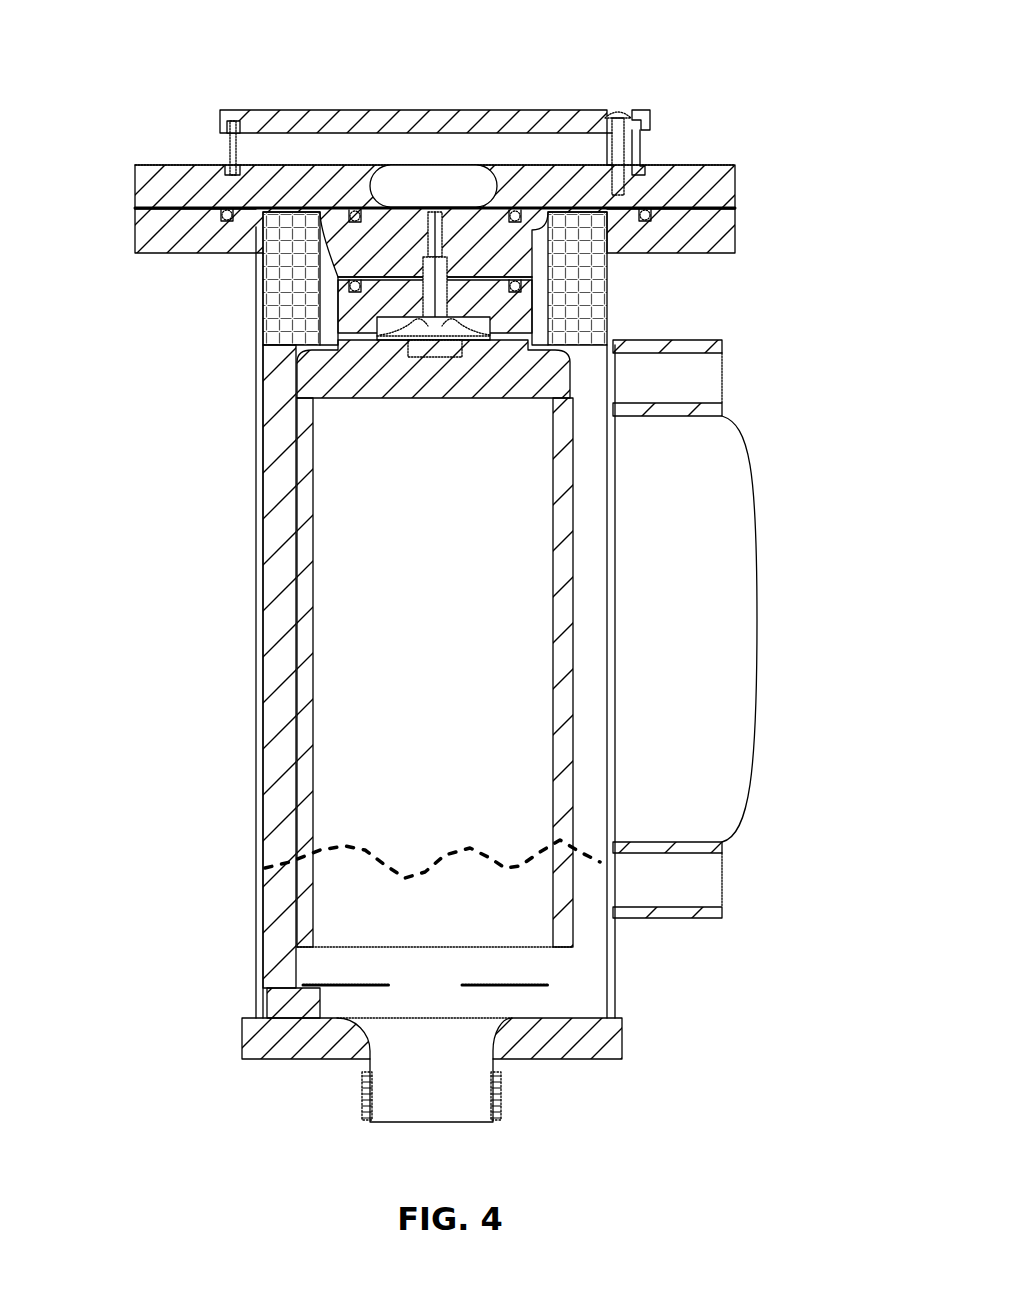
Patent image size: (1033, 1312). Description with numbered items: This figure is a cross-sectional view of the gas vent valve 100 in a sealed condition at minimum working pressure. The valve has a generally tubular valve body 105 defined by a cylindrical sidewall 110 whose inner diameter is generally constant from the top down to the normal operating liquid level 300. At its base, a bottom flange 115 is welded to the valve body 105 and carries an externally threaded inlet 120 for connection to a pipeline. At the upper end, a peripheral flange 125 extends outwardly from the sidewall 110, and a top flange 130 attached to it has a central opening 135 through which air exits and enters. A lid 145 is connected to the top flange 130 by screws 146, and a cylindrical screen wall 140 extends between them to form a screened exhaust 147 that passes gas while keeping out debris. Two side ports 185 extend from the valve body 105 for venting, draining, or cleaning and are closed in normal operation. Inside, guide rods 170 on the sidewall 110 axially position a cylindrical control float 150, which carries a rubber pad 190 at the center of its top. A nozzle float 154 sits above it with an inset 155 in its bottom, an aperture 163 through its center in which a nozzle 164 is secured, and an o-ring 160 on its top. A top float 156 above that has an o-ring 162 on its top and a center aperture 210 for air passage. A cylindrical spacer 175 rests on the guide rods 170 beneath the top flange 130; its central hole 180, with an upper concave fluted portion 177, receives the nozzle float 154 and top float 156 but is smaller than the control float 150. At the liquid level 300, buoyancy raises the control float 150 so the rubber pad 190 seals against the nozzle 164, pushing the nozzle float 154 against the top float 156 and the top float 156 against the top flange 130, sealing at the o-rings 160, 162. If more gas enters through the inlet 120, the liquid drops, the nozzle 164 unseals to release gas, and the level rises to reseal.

The gas vent valve 100 is at (198, 50).
The valve body 105 is at (205, 685).
The sidewall 110 is at (255, 795).
The bottom flange 115 is at (243, 1030).
The inlet 120 is at (502, 1100).
The peripheral flange 125 is at (137, 228).
The top flange 130 is at (737, 182).
The central opening 135 is at (387, 193).
The screen wall 140 is at (248, 140).
The lid 145 is at (630, 112).
The screws 146 is at (618, 156).
The screened exhaust 147 is at (222, 150).
The control float 150 is at (575, 705).
The nozzle float 154 is at (384, 201).
The inset 155 is at (430, 338).
The top float 156 is at (333, 255).
The o-ring 160 is at (517, 280).
The o-ring 162 is at (352, 208).
The aperture 163 is at (440, 342).
The nozzle 164 is at (416, 343).
The guide rods 170 is at (290, 550).
The spacer 175 is at (580, 262).
The upper concave fluted portion 177 is at (535, 215).
The central hole 180 is at (543, 335).
The side ports 185 is at (757, 629).
The rubber pad 190 is at (486, 332).
The center aperture 210 is at (436, 210).
The normal operating liquid level 300 is at (508, 878).